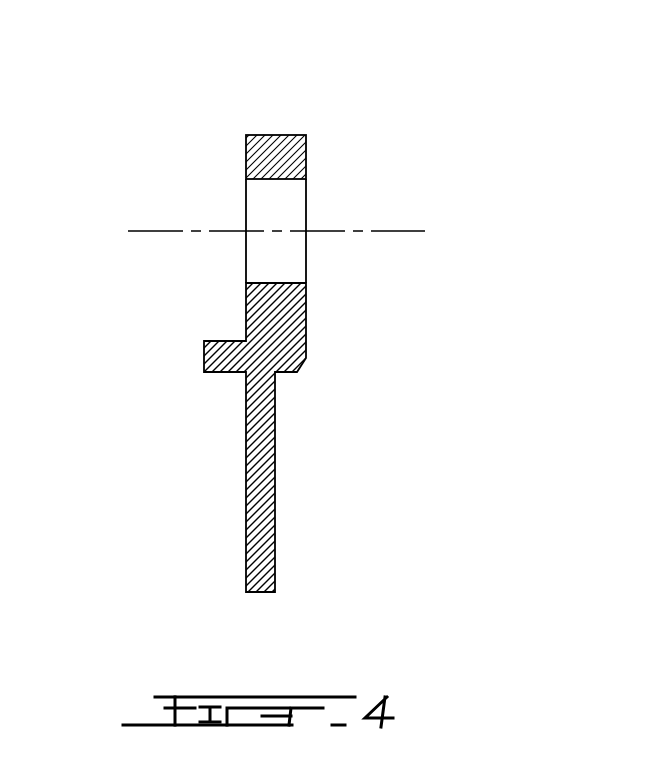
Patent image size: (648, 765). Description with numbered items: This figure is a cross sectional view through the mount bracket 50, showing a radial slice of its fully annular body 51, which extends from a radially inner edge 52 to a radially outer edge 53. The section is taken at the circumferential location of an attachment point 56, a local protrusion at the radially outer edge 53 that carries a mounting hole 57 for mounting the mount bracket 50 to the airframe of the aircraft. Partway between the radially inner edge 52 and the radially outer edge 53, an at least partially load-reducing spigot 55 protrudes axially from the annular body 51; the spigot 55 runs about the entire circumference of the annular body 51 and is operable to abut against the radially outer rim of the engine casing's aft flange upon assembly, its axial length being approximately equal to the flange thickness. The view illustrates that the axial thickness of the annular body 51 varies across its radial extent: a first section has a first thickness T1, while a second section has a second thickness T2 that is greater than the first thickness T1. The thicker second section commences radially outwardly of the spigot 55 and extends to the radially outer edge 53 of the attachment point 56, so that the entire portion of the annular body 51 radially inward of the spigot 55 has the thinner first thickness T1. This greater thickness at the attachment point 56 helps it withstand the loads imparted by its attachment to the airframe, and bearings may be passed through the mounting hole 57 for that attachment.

The mount bracket 50 is at (467, 191).
The annular body 51 is at (258, 433).
The radially inner edge 52 is at (258, 594).
The radially outer edge 53 is at (276, 134).
The spigot 55 is at (213, 357).
The attachment point 56 is at (330, 187).
The mounting hole 57 is at (263, 200).
The first thickness T1 is at (128, 494).
The second thickness T2 is at (128, 312).